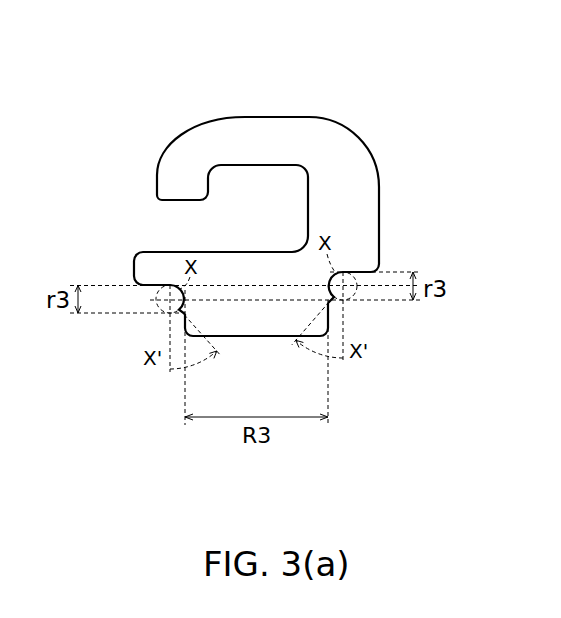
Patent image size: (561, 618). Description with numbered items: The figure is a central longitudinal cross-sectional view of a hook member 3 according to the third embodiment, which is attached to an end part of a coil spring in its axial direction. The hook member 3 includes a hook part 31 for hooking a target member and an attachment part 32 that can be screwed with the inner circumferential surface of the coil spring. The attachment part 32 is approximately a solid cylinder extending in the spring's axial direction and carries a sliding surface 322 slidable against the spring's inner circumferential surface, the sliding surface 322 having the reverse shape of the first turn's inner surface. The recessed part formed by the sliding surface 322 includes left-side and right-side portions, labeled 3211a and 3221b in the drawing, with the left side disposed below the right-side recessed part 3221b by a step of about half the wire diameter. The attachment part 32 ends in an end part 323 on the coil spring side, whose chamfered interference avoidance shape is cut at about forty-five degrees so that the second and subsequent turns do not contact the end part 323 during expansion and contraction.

The hook member 3 is at (422, 113).
The hook part 31 is at (180, 168).
The attachment part 32 is at (227, 267).
The sliding surface 322 is at (334, 289).
The end part 323 is at (247, 333).
The first arc surface 3211a is at (162, 298).
The right-side recessed part 3221b is at (352, 292).